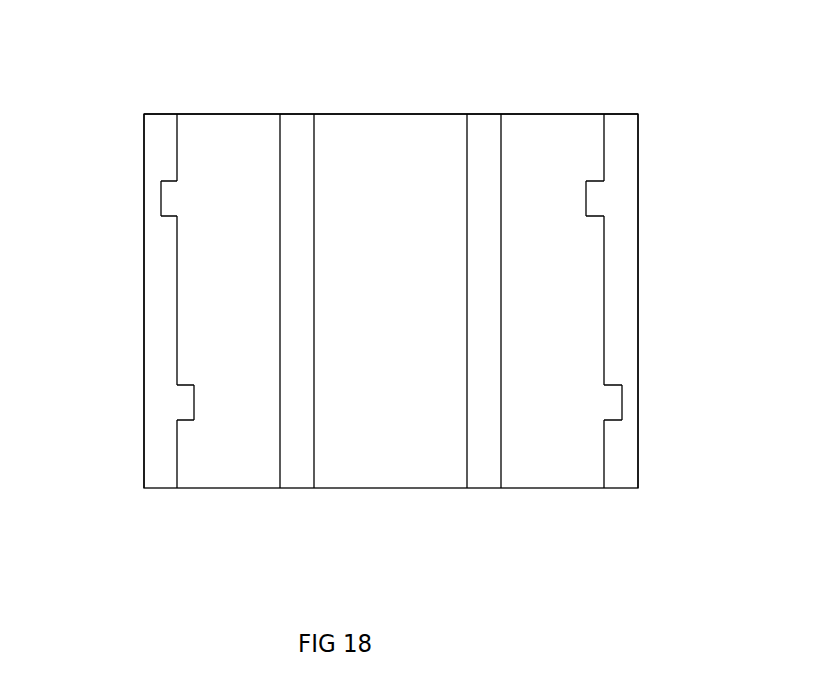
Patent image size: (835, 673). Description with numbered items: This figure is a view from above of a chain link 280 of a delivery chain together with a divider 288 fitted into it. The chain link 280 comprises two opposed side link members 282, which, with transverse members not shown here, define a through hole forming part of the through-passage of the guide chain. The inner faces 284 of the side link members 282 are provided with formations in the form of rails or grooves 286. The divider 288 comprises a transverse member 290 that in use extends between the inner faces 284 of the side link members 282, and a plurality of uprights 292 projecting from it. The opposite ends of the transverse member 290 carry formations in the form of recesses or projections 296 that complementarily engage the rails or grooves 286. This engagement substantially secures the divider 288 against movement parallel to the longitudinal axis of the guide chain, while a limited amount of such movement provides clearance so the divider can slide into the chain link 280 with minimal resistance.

The chain link 280 is at (587, 507).
The side link member 282 is at (144, 300).
The inner face 284 is at (177, 147).
The rail or groove 286 is at (161, 200).
The divider 288 is at (418, 112).
The transverse member 290 is at (330, 130).
The upright 292 is at (314, 455).
The recess or projection 296 is at (177, 200).